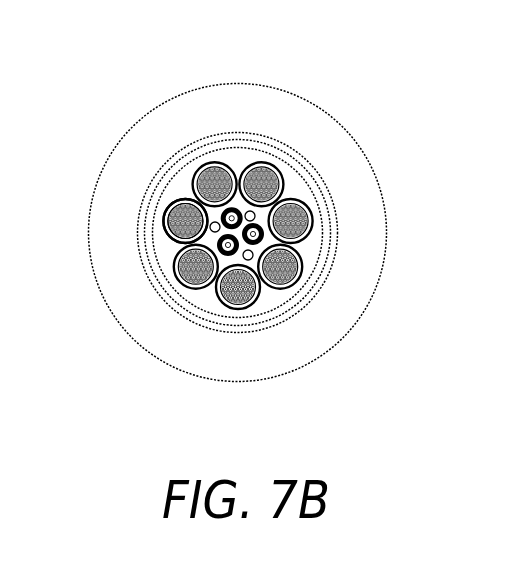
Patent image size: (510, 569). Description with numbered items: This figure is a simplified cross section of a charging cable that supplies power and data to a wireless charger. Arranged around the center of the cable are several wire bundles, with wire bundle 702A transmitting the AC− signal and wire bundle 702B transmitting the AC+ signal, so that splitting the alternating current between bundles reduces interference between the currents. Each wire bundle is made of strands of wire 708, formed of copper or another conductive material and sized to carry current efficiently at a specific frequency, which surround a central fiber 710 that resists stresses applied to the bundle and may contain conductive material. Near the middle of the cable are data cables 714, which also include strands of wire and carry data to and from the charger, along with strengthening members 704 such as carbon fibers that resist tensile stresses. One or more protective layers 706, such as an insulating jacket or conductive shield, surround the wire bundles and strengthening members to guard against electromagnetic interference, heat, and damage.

The wire bundle 702A is at (277, 167).
The wire bundle 702B is at (206, 164).
The strengthening member 704 is at (255, 212).
The protective layer 706 is at (352, 275).
The strand of wire 708 is at (174, 219).
The central fiber 710 is at (166, 215).
The data cable 714 is at (259, 245).